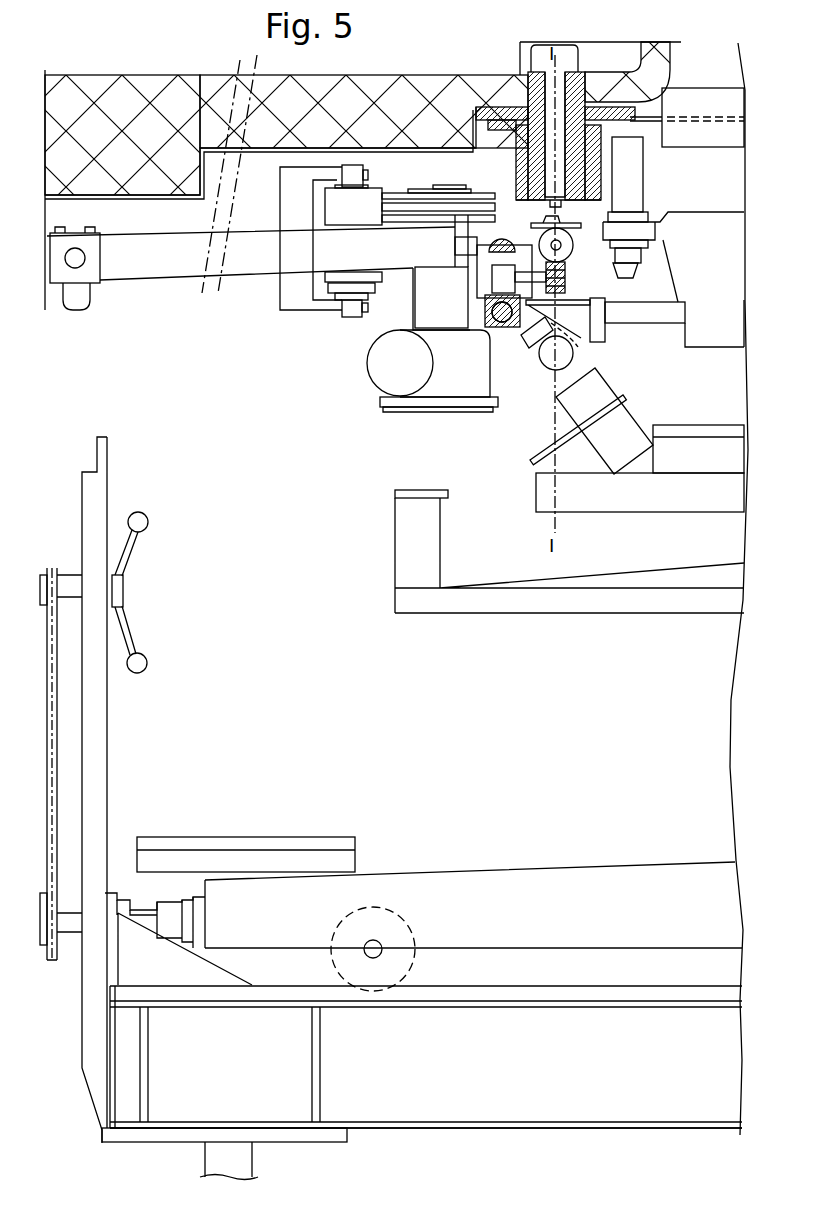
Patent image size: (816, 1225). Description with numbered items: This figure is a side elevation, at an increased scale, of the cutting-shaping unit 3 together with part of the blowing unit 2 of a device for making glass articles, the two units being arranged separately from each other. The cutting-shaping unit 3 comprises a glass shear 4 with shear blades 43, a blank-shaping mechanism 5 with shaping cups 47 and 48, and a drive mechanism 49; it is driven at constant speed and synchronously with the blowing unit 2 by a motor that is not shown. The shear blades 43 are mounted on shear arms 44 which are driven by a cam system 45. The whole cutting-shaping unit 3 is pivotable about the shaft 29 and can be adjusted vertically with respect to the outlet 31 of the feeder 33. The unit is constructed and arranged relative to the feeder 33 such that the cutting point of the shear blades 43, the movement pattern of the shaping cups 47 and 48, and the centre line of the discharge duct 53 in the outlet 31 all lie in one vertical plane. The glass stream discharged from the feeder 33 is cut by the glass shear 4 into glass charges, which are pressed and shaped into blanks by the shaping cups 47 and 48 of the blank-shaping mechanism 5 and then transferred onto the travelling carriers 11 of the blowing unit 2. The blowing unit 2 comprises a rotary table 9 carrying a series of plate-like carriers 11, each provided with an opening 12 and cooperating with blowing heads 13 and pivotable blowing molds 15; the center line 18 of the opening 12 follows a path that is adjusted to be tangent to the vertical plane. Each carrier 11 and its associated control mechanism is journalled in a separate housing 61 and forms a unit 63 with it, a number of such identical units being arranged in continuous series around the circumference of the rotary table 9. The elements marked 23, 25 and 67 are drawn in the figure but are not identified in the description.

The blowing unit 2 is at (465, 640).
The cutting-shaping unit 3 is at (308, 410).
The glass shear 4 is at (424, 184).
The blank-shaping mechanism 5 is at (483, 315).
The rotary table 9 is at (688, 425).
The plate-like carrier 11 is at (610, 323).
The opening 12 is at (565, 293).
The blowing head 13 is at (643, 200).
The pivotable blowing mold 15 is at (561, 415).
The center line 18 is at (562, 343).
The roller 23 is at (412, 963).
The base plate 25 is at (420, 1128).
The shaft 29 is at (100, 268).
The outlet 31 is at (516, 160).
The feeder 33 is at (634, 70).
The shear blade 43 is at (568, 224).
The shear arm 44 is at (468, 200).
The cam system 45 is at (438, 186).
The shaping cup 47 is at (572, 252).
The shaping cup 48 is at (556, 245).
The drive mechanism 49 is at (425, 412).
The discharge duct 53 is at (531, 62).
The housing 61 is at (672, 340).
The unit 63 is at (716, 297).
The carrier 67 is at (640, 323).